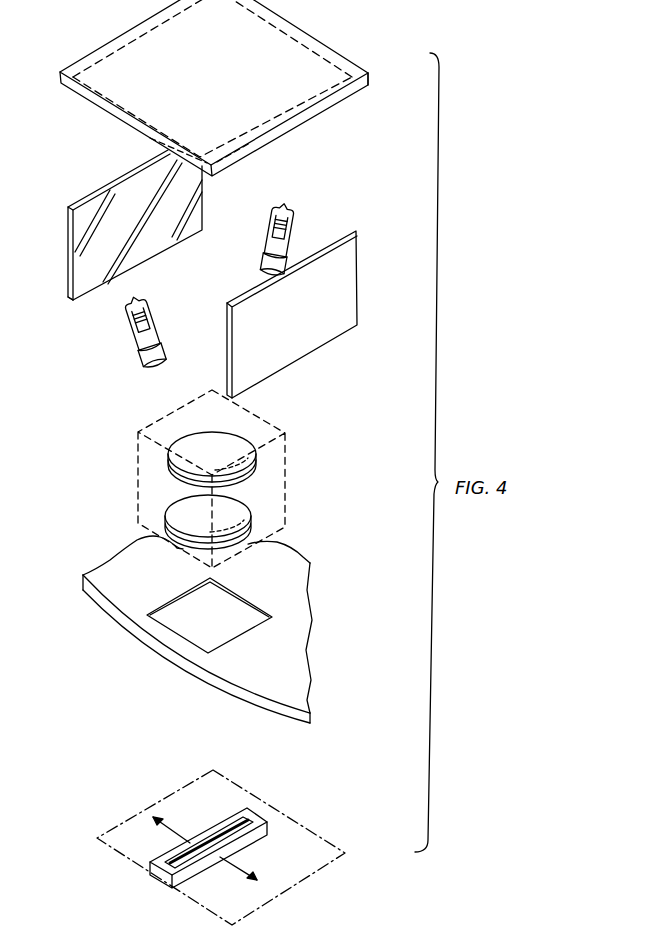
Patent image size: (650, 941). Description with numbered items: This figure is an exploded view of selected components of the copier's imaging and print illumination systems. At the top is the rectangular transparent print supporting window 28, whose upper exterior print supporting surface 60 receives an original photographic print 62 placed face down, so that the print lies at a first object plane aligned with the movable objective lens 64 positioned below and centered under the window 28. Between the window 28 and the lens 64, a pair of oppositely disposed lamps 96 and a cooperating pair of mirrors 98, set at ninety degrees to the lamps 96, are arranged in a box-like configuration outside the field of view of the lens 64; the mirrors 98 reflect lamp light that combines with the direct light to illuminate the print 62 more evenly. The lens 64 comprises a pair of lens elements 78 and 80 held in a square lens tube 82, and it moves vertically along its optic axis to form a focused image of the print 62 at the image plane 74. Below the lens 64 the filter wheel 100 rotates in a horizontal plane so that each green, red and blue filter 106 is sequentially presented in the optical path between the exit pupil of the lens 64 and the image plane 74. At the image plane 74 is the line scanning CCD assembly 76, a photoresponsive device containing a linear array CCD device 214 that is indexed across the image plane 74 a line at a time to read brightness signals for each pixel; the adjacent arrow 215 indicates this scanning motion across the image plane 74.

The print supporting window 28 is at (313, 31).
The upper exterior print supporting surface 60 is at (208, 31).
The original photographic print 62 is at (137, 50).
The movable objective lens 64 is at (287, 485).
The image plane 74 is at (312, 837).
The line scanning CCD assembly 76 is at (260, 822).
The lens element 78 is at (237, 517).
The lens element 80 is at (233, 445).
The square lens tube 82 is at (285, 452).
The lamp 96 is at (267, 233).
The mirror 98 is at (92, 277).
The filter wheel 100 is at (207, 687).
The filter 106 is at (228, 602).
The linear array CCD device 214 is at (175, 857).
The direction arrow 215 is at (190, 875).